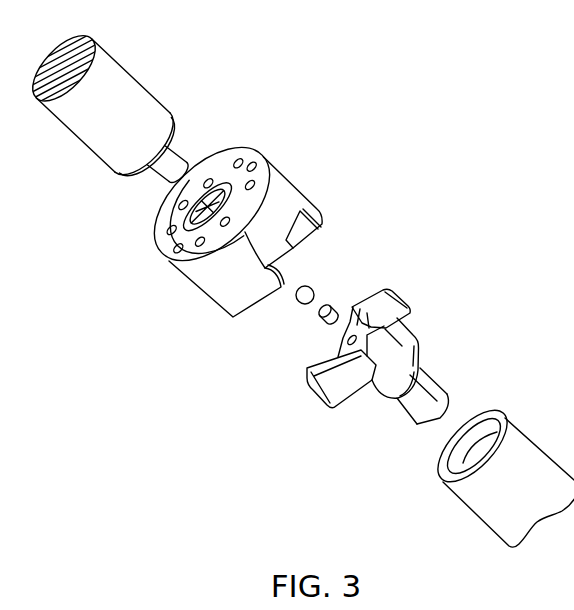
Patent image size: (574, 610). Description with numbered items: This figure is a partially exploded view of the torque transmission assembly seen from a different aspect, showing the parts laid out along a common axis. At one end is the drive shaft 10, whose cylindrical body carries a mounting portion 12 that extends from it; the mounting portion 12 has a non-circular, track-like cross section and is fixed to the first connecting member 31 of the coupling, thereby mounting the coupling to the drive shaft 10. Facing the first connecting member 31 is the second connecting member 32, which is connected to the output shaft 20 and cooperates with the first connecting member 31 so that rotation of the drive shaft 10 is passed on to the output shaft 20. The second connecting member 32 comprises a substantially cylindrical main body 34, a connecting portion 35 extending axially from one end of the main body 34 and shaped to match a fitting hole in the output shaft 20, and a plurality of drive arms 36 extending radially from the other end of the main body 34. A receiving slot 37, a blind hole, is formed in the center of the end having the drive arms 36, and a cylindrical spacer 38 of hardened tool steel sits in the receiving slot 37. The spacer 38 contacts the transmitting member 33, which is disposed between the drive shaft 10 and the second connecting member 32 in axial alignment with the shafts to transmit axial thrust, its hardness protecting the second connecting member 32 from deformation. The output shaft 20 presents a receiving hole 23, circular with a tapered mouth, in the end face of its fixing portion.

The drive shaft 10 is at (135, 88).
The mounting portion 12 is at (170, 158).
The output shaft 20 is at (469, 482).
The receiving hole 23 is at (472, 455).
The first connecting member 31 is at (267, 203).
The second connecting member 32 is at (358, 356).
The transmitting member 33 is at (306, 294).
The main body 34 is at (360, 368).
The connecting portion 35 is at (423, 400).
The drive arms 36 is at (395, 315).
The receiving slot 37 is at (353, 308).
The spacer 38 is at (321, 321).